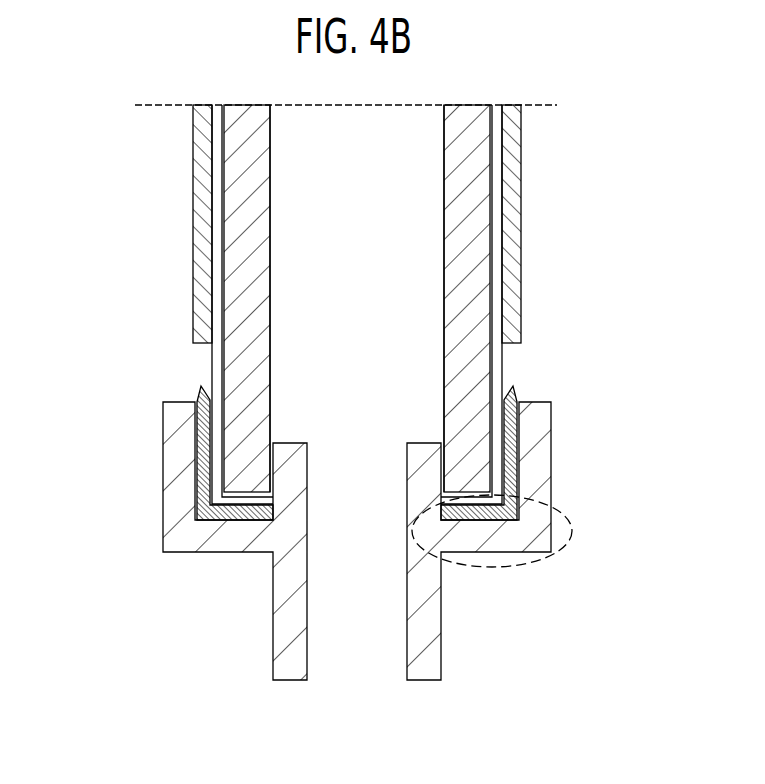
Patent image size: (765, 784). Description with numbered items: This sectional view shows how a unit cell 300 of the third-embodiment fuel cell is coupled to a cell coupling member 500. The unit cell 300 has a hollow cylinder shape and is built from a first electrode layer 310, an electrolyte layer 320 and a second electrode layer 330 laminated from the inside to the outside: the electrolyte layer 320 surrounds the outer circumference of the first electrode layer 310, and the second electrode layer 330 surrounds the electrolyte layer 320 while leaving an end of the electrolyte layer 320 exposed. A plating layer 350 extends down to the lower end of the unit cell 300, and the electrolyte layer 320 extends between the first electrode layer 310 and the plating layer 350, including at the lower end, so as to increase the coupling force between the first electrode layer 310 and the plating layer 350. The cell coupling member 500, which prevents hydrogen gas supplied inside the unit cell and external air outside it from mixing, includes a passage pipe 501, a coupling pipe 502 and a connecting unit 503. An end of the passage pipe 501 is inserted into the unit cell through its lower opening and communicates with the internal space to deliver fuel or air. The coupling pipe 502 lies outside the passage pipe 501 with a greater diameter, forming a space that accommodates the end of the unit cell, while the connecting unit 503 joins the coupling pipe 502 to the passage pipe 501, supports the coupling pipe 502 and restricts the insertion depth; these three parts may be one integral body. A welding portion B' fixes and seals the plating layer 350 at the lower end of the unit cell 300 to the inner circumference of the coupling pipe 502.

The unit cell 300 is at (293, 304).
The first electrode layer 310 is at (235, 218).
The electrolyte layer 320 is at (220, 257).
The second electrode layer 330 is at (203, 325).
The plating layer 350 is at (197, 383).
The welding portion B' is at (151, 440).
The cell coupling member 500 is at (343, 572).
The passage pipe 501 is at (415, 597).
The coupling pipe 502 is at (173, 503).
The connecting unit 503 is at (573, 516).